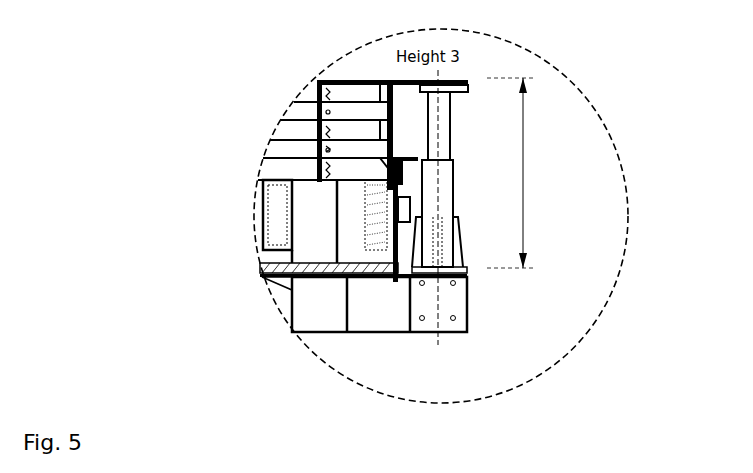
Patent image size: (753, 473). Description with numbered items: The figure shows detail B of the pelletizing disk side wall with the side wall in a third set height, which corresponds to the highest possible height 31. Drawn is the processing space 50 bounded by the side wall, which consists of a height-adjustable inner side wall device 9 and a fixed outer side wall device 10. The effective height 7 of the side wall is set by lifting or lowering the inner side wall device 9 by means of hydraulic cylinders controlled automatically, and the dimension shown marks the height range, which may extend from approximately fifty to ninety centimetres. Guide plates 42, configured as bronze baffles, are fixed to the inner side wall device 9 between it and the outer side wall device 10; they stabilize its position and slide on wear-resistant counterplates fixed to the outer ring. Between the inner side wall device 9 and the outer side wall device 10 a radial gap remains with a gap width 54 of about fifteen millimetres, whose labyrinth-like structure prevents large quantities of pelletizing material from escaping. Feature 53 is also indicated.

The effective height 7 is at (533, 220).
The inner side wall device 9 is at (387, 110).
The outer side wall device 10 is at (402, 187).
The highest possible height 31 is at (530, 196).
The guide plates 42 is at (375, 222).
The processing space 50 is at (282, 133).
The ledge / vertical bar 53 is at (395, 157).
The gap width 54 is at (395, 195).